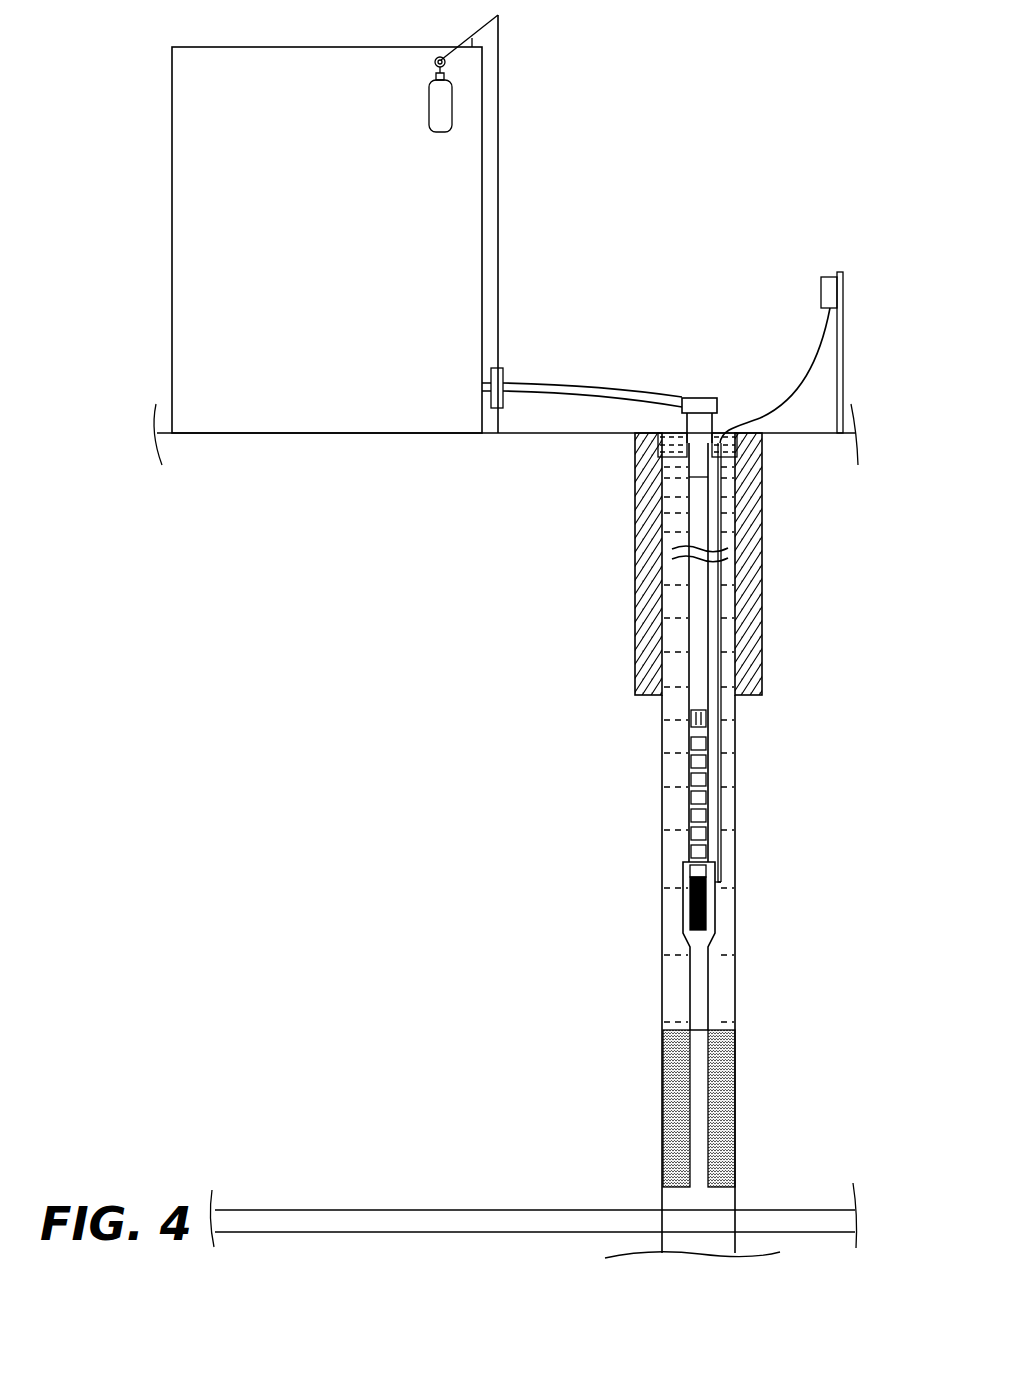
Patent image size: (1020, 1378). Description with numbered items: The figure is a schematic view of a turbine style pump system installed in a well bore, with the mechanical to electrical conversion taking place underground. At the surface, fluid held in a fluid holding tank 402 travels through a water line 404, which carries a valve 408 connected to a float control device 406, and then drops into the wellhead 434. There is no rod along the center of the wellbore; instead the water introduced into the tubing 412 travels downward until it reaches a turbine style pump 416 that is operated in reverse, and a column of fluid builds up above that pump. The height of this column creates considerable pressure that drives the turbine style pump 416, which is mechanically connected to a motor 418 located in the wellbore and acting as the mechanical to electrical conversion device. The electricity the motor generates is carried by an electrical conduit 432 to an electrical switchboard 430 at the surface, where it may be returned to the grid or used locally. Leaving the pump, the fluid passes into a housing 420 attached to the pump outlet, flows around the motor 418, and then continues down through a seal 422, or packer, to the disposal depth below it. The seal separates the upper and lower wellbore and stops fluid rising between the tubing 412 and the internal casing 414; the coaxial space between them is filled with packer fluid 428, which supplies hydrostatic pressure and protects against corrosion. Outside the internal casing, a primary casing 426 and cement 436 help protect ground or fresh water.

The fluid holding tank 402 is at (308, 243).
The water line 404 is at (521, 384).
The float control device 406 is at (502, 76).
The valve 408 is at (501, 412).
The tubing 412 is at (710, 597).
The internal casing 414 is at (740, 746).
The turbine style pump 416 is at (698, 856).
The motor 418 is at (718, 898).
The housing 420 is at (718, 931).
The seal 422 is at (723, 1118).
The primary casing 426 is at (636, 587).
The fluid 428 is at (675, 920).
The electrical switchboard 430 is at (831, 276).
The electrical conduit 432 is at (813, 353).
The wellhead 434 is at (718, 406).
The cement 436 is at (645, 503).